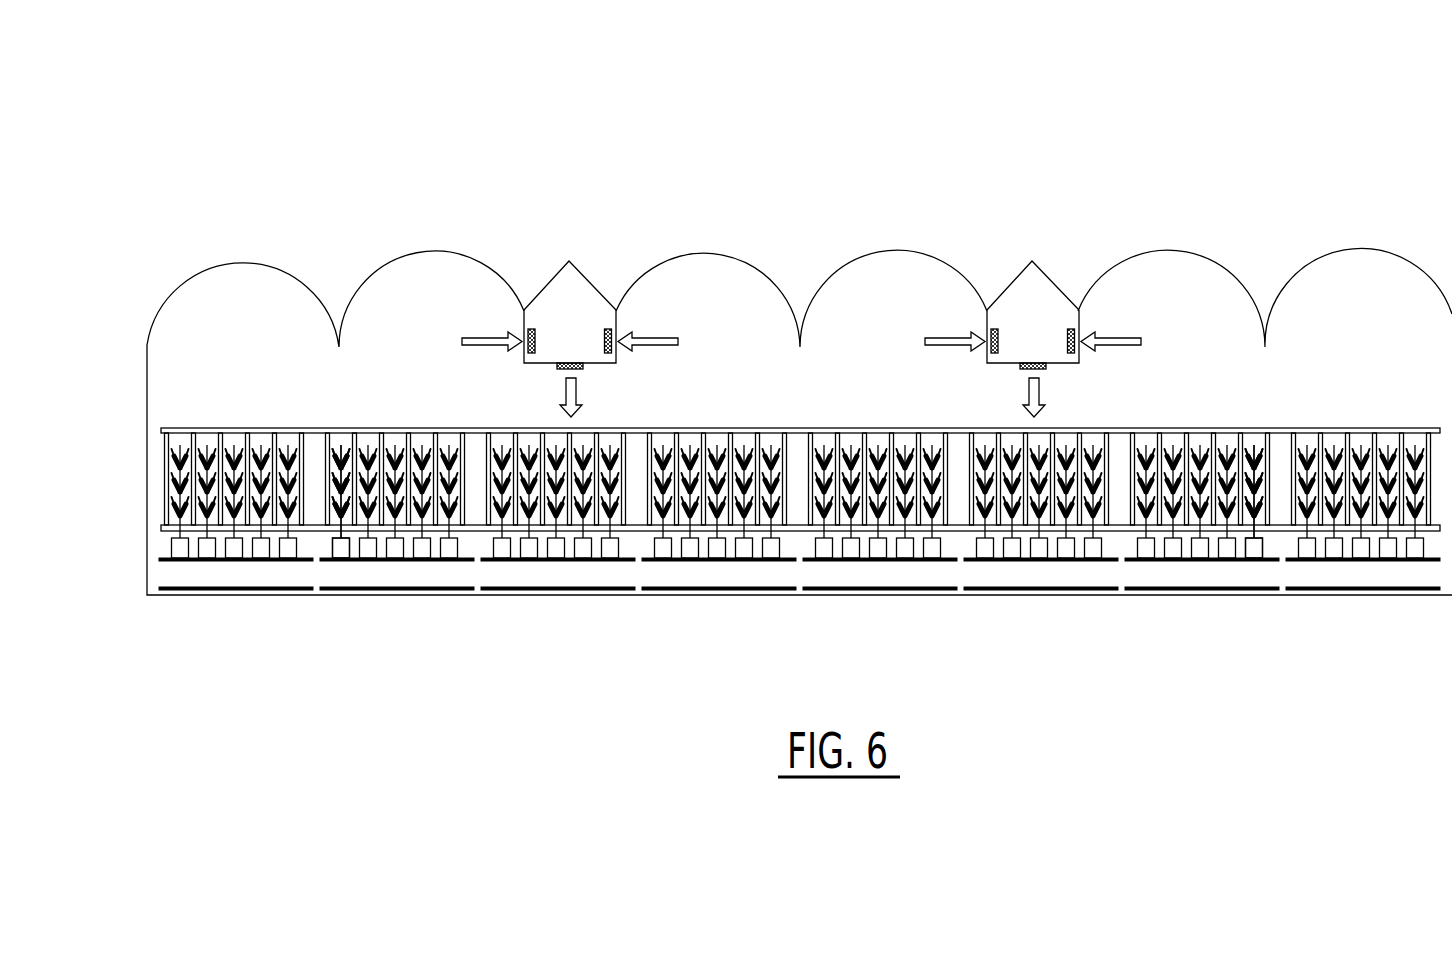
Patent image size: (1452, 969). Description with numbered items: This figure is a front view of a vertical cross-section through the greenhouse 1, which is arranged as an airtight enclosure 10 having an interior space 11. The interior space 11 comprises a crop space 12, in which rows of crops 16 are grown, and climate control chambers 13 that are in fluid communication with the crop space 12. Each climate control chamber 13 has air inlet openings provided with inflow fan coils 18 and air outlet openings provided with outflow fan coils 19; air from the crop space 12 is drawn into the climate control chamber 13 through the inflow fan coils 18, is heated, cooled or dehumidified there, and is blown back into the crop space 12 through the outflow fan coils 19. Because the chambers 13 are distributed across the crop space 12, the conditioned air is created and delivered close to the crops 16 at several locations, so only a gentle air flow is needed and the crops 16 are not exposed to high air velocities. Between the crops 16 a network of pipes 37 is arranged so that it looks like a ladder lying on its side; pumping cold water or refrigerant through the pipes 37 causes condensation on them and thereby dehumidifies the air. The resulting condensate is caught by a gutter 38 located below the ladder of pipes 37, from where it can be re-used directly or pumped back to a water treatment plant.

The greenhouse 1 is at (800, 185).
The airtight enclosure 10 is at (1386, 241).
The interior space 11 is at (1226, 394).
The crop space 12 is at (177, 388).
The climate control chamber 13 is at (567, 340).
The crops 16 is at (337, 465).
The inflow fan coil 18 is at (530, 316).
The outflow fan coil 19 is at (592, 377).
The network of pipes 37 is at (262, 430).
The gutter 38 is at (635, 527).